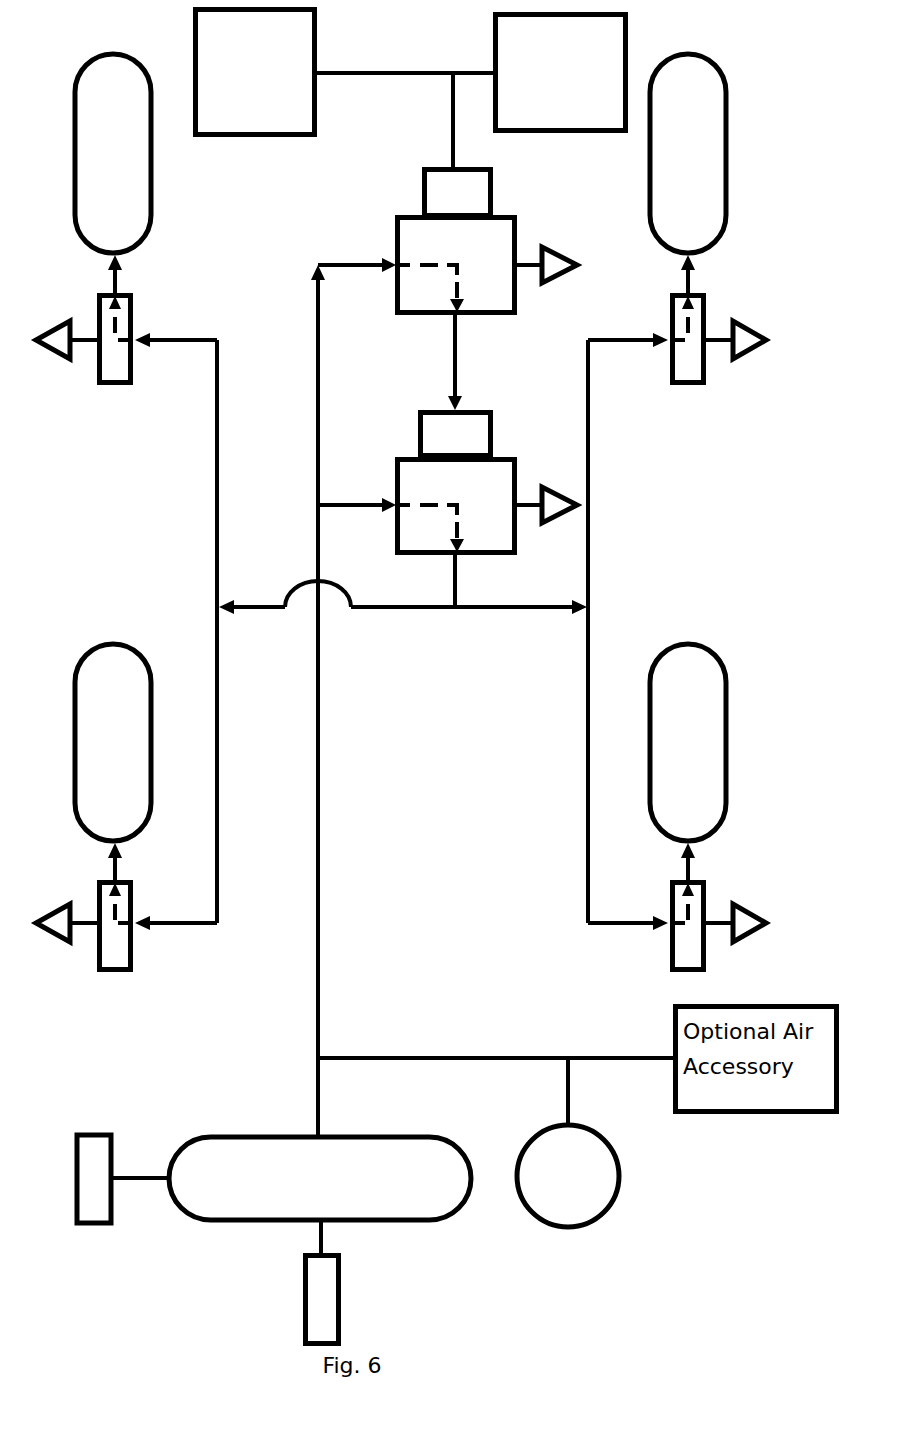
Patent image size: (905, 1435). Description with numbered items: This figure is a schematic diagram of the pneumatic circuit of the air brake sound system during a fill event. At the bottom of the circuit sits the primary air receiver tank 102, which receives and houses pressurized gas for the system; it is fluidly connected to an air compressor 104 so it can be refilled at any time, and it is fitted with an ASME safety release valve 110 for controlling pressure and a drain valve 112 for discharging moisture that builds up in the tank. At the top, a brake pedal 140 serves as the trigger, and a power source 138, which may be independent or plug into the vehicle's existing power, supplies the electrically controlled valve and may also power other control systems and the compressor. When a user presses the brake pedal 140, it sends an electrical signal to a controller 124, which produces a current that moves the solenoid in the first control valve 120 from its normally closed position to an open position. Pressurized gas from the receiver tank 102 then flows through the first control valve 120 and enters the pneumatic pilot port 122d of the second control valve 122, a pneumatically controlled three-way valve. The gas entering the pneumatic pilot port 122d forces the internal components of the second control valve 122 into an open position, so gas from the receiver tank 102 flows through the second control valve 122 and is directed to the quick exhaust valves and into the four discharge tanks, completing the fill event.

The primary air receiver tank 102 is at (320, 1178).
The air compressor 104 is at (568, 1176).
The ASME safety release valve 110 is at (84, 1132).
The drain valve 112 is at (340, 1298).
The first control valve 120 is at (400, 315).
The second control valve 122 is at (505, 457).
The pneumatic pilot port 122d is at (456, 434).
The controller 124 is at (458, 193).
The power source 138 is at (561, 73).
The brake pedal 140 is at (255, 72).